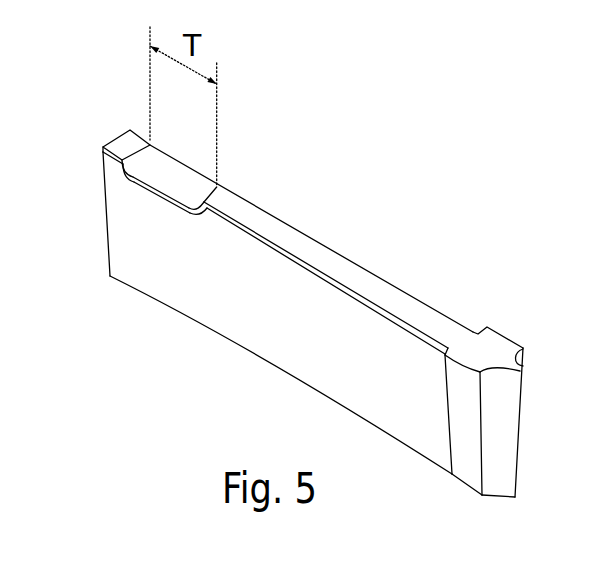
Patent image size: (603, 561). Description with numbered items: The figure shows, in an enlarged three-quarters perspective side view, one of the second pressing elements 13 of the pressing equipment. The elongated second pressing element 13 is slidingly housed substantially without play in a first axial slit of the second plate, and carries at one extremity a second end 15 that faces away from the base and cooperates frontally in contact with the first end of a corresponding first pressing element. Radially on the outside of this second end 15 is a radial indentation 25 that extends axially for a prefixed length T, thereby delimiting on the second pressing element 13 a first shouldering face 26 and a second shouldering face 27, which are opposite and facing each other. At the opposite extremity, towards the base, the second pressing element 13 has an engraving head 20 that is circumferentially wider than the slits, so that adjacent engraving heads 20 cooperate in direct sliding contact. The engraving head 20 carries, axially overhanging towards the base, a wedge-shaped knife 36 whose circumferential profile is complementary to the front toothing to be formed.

The second pressing element 13 is at (312, 210).
The second end 15 is at (117, 207).
The engraving head 20 is at (516, 430).
The radial indentation 25 is at (152, 232).
The first shouldering face 26 is at (143, 160).
The second shouldering face 27 is at (188, 191).
The wedge-shaped knife 36 is at (505, 428).